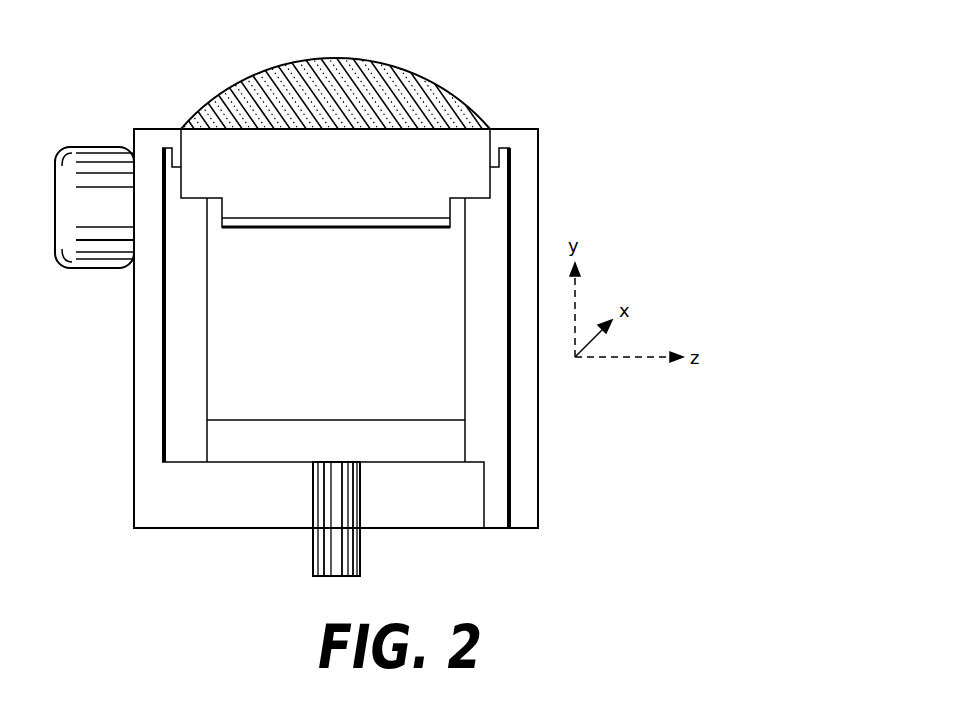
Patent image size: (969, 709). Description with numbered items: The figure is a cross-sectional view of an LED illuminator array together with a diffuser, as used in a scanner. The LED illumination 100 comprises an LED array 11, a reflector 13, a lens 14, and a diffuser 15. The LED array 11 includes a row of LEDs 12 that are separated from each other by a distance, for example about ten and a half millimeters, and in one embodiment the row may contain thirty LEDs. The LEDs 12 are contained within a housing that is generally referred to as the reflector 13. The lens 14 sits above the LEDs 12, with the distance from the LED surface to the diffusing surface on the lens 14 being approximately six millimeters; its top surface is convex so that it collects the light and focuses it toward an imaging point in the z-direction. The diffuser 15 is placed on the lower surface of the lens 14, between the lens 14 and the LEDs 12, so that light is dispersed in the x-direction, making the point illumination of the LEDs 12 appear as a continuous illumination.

The LED illumination 100 is at (546, 44).
The LED array 11 is at (352, 548).
The LEDs 12 is at (335, 497).
The reflector 13 is at (539, 462).
The lens 14 is at (453, 105).
The diffuser 15 is at (375, 222).